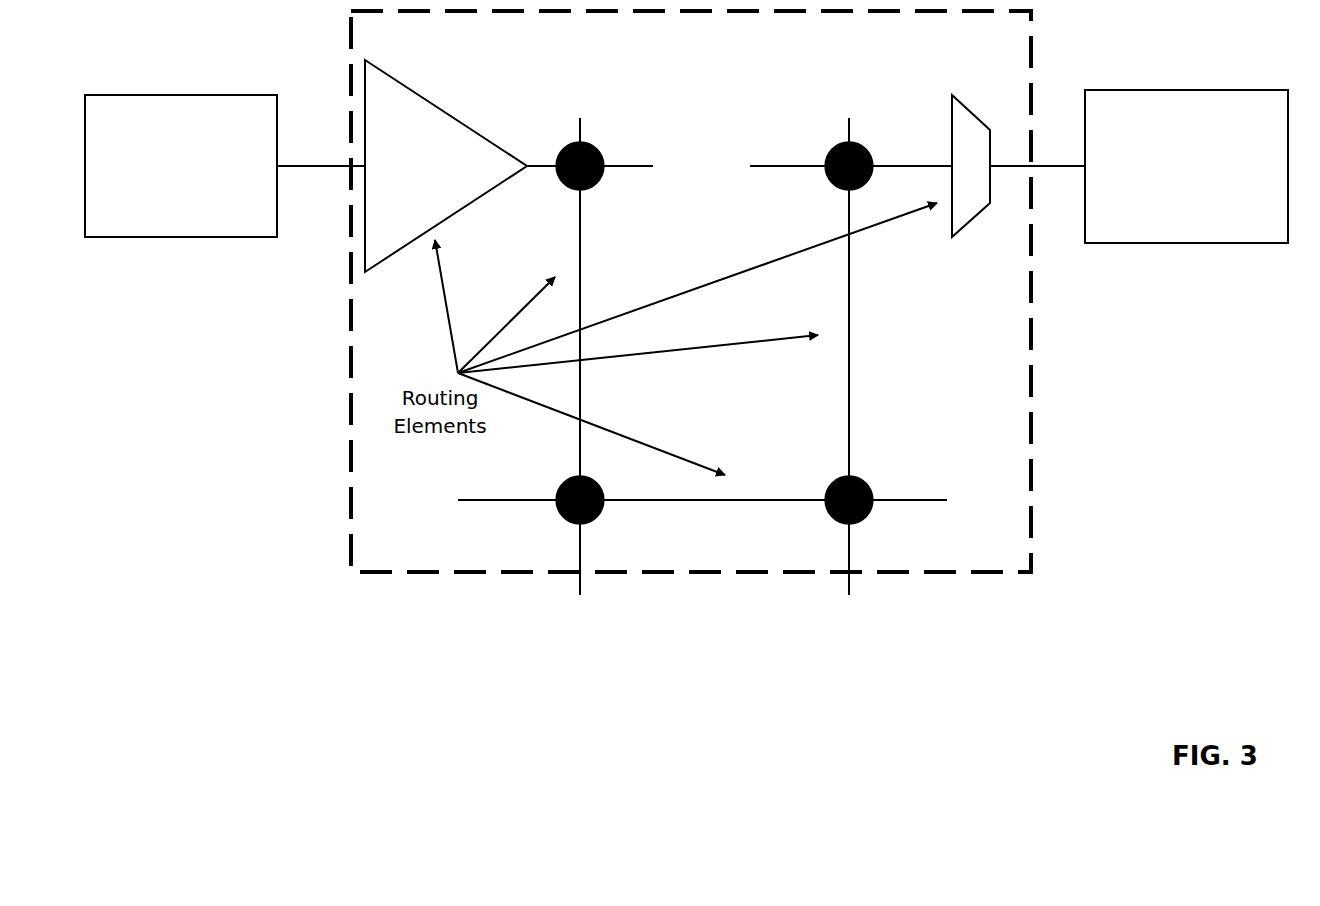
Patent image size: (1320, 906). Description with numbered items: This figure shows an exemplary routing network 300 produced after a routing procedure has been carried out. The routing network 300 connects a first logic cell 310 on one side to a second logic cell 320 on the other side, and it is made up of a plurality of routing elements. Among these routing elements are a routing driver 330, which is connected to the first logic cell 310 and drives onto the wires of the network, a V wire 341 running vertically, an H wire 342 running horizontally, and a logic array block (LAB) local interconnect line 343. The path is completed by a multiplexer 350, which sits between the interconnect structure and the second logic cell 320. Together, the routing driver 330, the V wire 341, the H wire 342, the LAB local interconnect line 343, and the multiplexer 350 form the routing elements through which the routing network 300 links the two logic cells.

The routing network 300 is at (1010, 549).
The first logic cell 310 is at (264, 227).
The second logic cell 320 is at (1274, 234).
The routing driver 330 is at (411, 233).
The V wire 341 is at (578, 207).
The H wire 342 is at (781, 535).
The logic array block (LAB) local interconnect line 343 is at (849, 232).
The multiplexer 350 is at (998, 252).